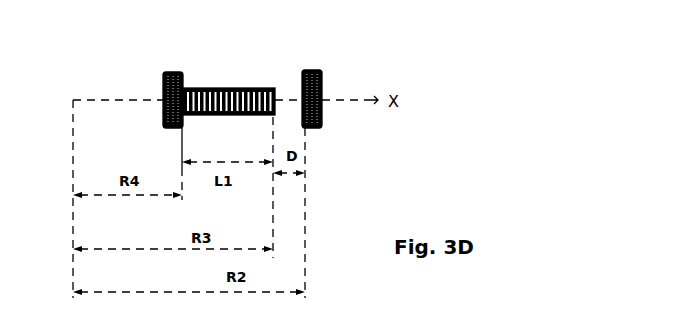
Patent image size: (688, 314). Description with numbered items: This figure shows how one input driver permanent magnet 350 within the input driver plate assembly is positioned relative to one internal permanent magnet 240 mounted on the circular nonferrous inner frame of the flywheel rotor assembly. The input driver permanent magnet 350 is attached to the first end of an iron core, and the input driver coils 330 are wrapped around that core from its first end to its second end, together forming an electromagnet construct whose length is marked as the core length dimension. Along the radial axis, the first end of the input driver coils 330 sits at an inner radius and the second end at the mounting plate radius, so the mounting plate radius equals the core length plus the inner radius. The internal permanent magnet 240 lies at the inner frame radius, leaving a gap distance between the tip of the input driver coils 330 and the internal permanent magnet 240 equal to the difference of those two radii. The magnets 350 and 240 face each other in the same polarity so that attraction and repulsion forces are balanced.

The input driver permanent magnet 350 is at (175, 72).
The input driver coils 330 is at (230, 88).
The internal permanent magnet 240 is at (320, 70).